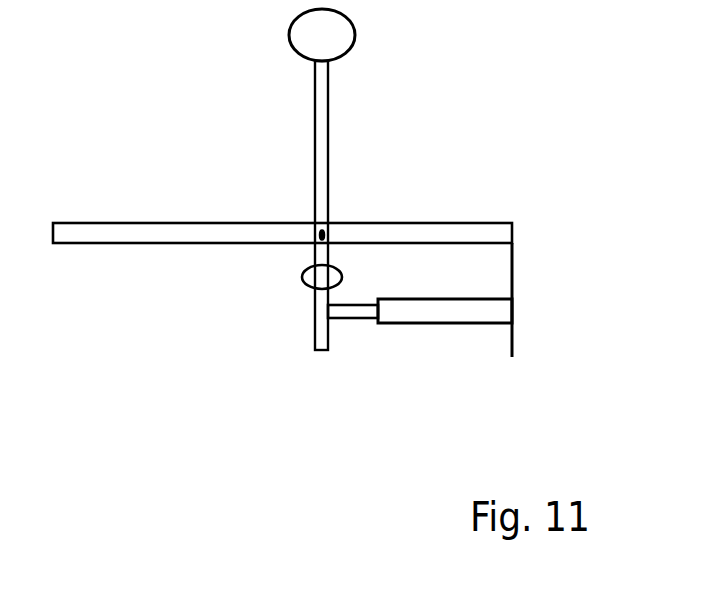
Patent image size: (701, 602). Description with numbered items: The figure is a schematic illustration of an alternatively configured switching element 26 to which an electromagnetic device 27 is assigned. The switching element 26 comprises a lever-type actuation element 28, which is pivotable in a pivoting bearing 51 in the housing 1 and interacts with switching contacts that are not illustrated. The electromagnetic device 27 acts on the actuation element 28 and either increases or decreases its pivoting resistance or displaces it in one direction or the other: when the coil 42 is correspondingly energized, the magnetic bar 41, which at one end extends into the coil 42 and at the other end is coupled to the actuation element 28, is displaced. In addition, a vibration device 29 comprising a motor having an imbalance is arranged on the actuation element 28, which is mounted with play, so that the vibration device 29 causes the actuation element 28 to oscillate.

The housing 1 is at (499, 233).
The switching element 26 is at (190, 104).
The electromagnetic device 27 is at (418, 353).
The actuation element 28 is at (302, 88).
The vibration device 29 is at (320, 283).
The magnetic bar 41 is at (360, 320).
The coil 42 is at (462, 316).
The pivoting bearing 51 is at (325, 233).